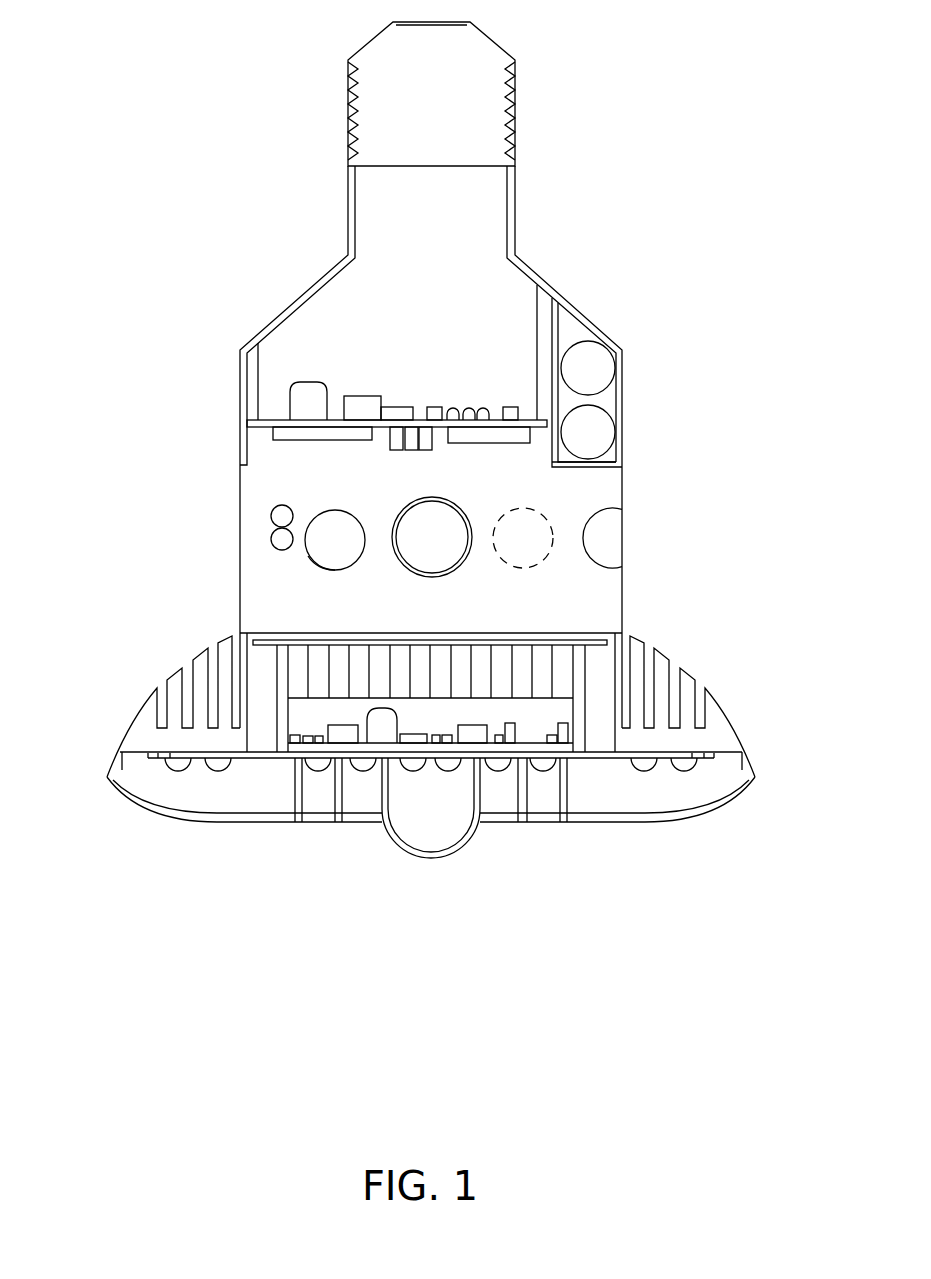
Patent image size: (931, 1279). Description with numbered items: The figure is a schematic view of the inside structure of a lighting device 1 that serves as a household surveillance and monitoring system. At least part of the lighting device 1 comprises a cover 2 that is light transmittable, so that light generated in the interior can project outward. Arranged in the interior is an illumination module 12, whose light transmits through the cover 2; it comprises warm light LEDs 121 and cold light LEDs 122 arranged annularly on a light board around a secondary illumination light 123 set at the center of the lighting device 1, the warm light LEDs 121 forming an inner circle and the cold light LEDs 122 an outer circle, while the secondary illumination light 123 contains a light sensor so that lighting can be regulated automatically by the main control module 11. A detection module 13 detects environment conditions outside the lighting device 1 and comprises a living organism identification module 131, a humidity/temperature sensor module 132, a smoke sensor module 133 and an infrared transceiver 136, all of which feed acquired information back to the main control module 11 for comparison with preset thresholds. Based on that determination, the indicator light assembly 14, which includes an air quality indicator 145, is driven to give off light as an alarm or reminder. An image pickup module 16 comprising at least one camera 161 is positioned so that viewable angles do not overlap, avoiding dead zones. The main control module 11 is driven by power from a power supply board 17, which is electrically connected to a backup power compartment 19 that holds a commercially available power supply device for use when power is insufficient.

The lighting device 1 is at (332, 245).
The cover 2 is at (667, 825).
The main control module 11 is at (287, 668).
The illumination module 12 is at (167, 770).
The warm light LED 121 is at (650, 770).
The cold light LED 122 is at (690, 770).
The secondary illumination light 123 is at (450, 857).
The detection module 13 is at (298, 557).
The living organism identification module 131 is at (543, 560).
The humidity/temperature sensor module 132 is at (313, 560).
The smoke sensor module 133 is at (608, 535).
The infrared transceiver 136 is at (278, 505).
The indicator light assembly 14 is at (318, 822).
The air quality indicator 145 is at (363, 822).
The image pickup module 16 is at (465, 502).
The camera 161 is at (432, 548).
The power supply board 17 is at (282, 418).
The backup power compartment 19 is at (622, 350).